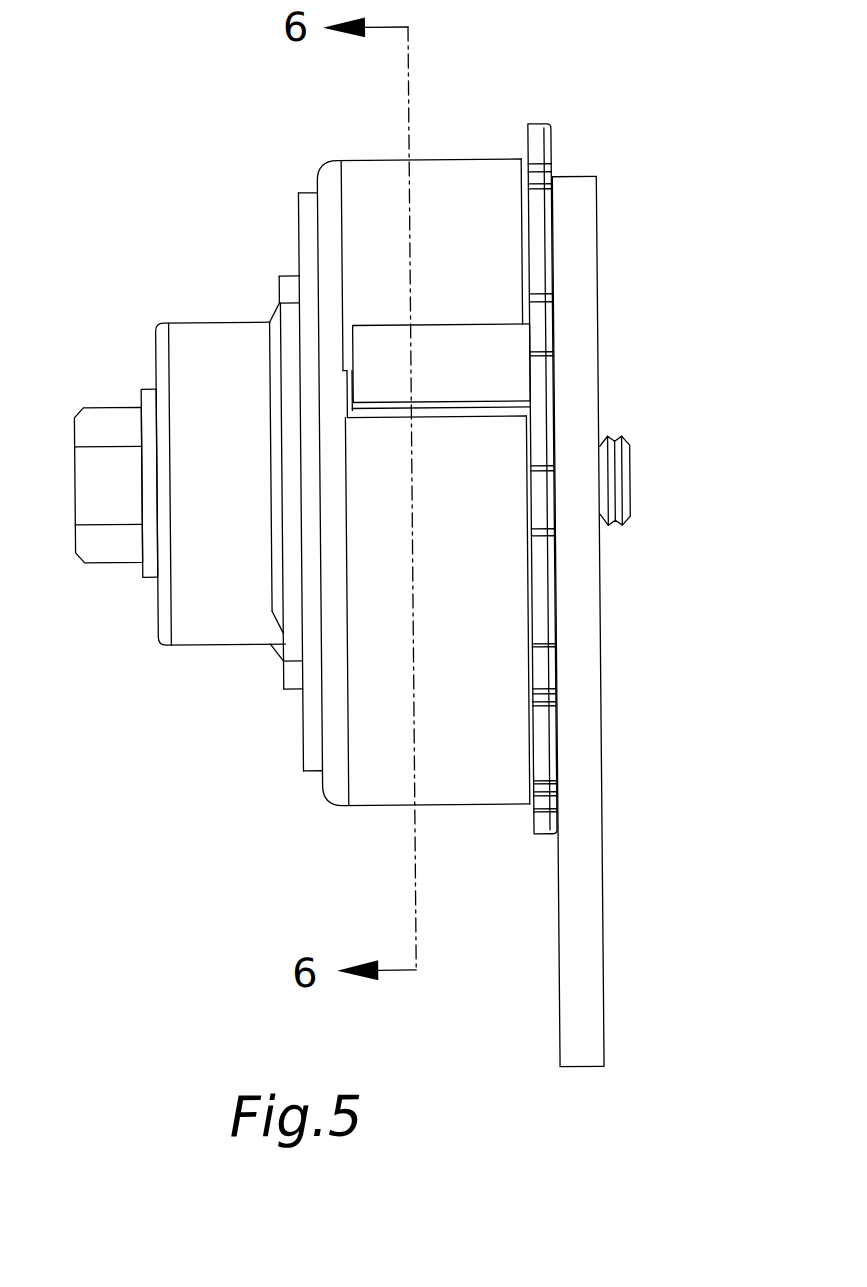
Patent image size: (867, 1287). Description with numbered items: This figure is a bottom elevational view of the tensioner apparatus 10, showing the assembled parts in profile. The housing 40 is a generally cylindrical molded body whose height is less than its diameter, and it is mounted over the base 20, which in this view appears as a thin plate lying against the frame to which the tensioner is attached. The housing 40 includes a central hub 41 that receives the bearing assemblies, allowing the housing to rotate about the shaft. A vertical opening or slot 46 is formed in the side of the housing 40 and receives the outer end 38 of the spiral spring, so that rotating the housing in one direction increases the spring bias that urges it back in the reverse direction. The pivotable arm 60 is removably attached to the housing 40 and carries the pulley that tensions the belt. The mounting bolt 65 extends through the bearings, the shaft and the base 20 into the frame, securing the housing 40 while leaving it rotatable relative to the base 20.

The tensioner apparatus 10 is at (585, 117).
The base 20 is at (526, 543).
The outer end of the spring 38 is at (464, 350).
The housing 40 is at (399, 433).
The central hub 41 is at (191, 437).
The vertical opening or slot 46 is at (471, 419).
The pivotable arm 60 is at (227, 543).
The mounting bolt 65 is at (646, 434).